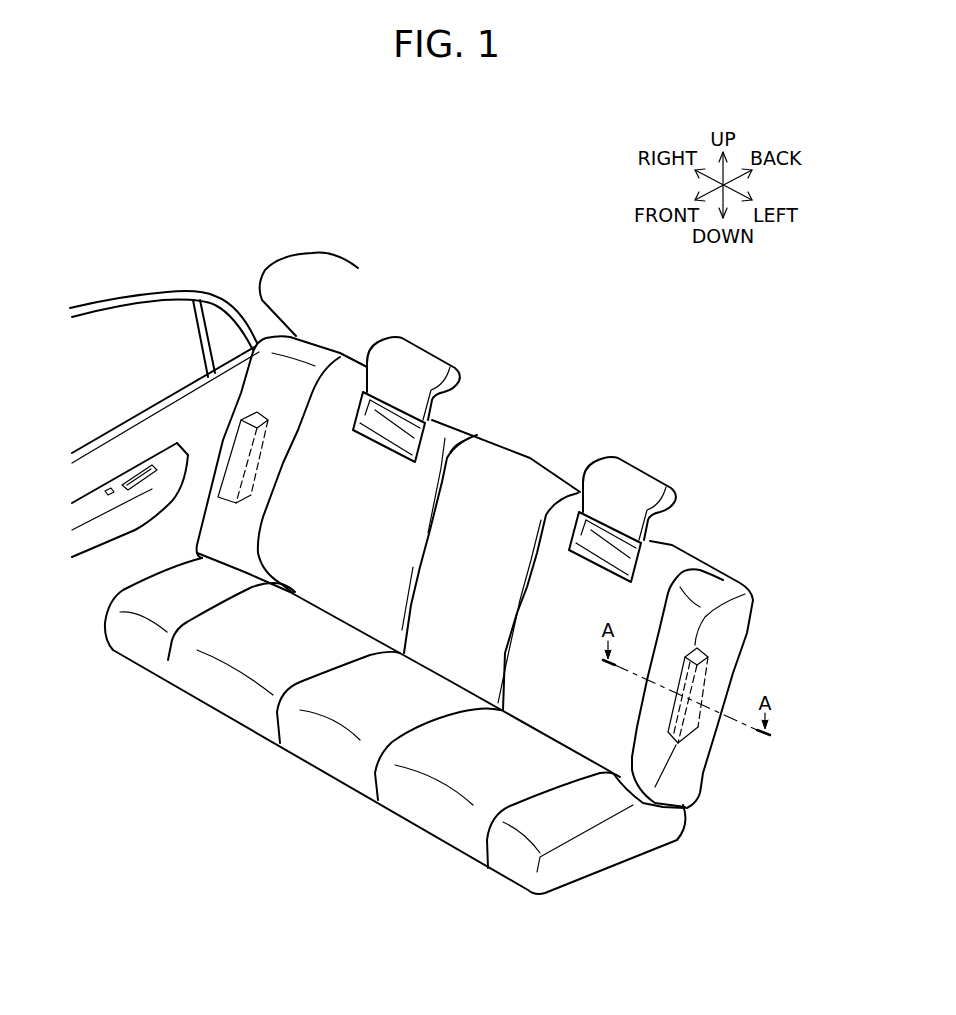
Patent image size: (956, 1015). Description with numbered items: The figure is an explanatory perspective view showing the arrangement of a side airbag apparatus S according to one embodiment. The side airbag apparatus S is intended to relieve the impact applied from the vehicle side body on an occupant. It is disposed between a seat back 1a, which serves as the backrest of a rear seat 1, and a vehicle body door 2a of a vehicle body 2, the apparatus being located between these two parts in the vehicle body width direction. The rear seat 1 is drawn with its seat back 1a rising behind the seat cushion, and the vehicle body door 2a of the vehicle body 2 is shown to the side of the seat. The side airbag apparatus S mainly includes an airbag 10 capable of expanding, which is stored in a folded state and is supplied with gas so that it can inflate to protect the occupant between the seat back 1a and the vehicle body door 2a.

The rear seat 1 is at (493, 422).
The seat back 1a is at (513, 473).
The vehicle body 2 is at (105, 290).
The vehicle body door 2a is at (160, 437).
The side airbag apparatus S is at (708, 590).
The airbag 10 is at (700, 683).